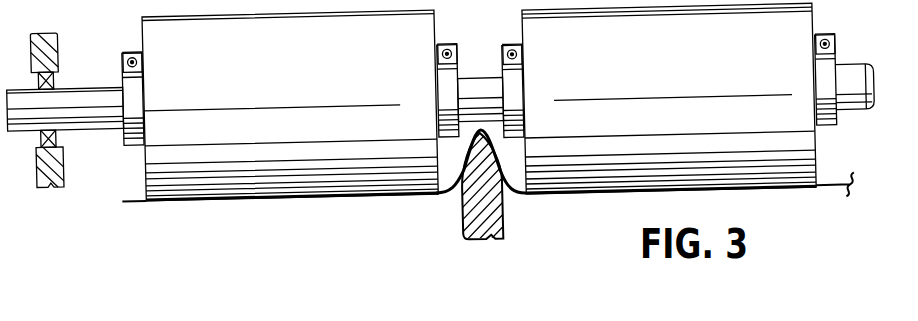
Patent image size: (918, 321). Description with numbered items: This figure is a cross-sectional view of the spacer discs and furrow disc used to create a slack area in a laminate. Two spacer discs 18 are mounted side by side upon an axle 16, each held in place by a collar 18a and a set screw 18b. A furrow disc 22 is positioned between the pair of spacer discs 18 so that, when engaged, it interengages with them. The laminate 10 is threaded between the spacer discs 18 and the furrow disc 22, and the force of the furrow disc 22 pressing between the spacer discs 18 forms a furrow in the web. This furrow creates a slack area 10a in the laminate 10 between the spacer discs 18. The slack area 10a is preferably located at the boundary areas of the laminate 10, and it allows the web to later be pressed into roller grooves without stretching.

The laminate 10 is at (145, 207).
The slack area 10a is at (481, 122).
The axle 16 is at (88, 88).
The spacer discs 18 is at (289, 79).
The collar 18a is at (132, 88).
The set screw 18b is at (138, 62).
The furrow discs 22 is at (504, 217).